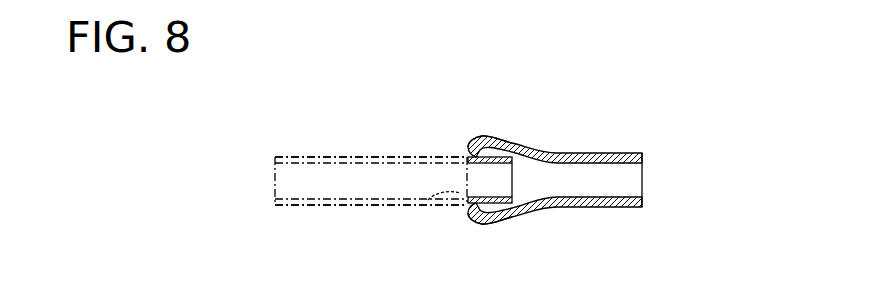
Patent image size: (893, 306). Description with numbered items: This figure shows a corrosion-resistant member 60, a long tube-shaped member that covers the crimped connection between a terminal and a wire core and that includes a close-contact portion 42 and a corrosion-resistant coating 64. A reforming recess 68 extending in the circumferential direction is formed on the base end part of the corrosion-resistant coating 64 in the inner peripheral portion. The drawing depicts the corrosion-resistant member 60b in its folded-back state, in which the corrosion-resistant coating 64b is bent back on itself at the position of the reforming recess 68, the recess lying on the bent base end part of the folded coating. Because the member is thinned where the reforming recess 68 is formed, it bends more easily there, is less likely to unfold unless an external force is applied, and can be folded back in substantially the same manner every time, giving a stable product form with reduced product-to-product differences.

The corrosion-resistant member 60 is at (322, 151).
The corrosion-resistant member in folded-back state 60b is at (527, 165).
The corrosion-resistant coating 64 is at (350, 157).
The corrosion-resistant coating in folded-back state 64b is at (612, 153).
The reforming recess 68 is at (470, 148).
The close-contact portion 42 is at (505, 156).